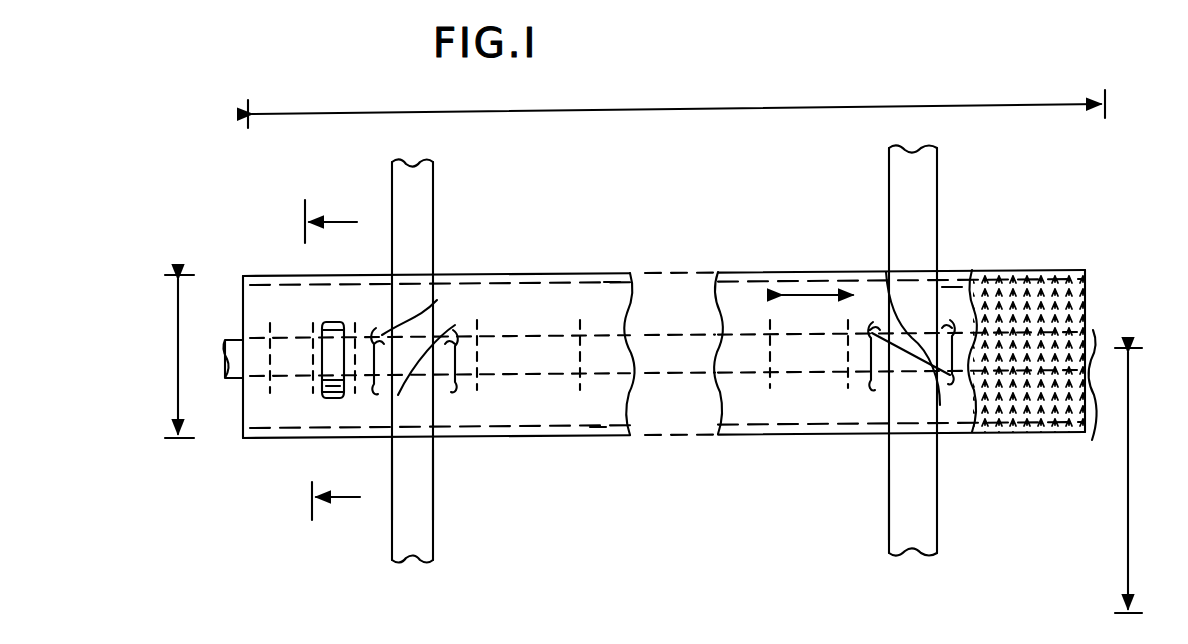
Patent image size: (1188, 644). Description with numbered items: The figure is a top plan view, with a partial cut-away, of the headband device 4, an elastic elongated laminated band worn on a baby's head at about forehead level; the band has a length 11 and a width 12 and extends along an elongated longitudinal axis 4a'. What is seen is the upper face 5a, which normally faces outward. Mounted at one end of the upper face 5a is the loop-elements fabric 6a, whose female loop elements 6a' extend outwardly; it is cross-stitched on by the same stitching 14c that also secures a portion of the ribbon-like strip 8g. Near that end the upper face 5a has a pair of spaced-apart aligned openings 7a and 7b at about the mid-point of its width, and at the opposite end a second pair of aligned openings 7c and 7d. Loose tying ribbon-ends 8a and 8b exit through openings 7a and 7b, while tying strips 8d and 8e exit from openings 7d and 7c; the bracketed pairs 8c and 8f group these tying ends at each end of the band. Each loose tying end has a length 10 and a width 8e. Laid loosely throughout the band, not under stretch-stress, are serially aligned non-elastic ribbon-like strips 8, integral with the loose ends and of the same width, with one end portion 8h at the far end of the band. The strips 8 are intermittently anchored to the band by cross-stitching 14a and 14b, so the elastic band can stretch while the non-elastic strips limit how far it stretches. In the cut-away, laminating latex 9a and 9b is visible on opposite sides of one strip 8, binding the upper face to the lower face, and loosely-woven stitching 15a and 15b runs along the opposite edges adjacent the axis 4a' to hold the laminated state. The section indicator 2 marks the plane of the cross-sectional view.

The section line 2- 2 is at (332, 358).
The device 4 is at (792, 176).
The elongated longitudinal axis 4a' is at (797, 363).
The upper face 5a is at (952, 285).
The woven covering 6a is at (1029, 324).
The female loop elements 6a' is at (1119, 315).
The opening 7a is at (952, 440).
The opening 7b is at (886, 272).
The opening 7c is at (457, 328).
The opening 7d is at (380, 335).
The non-elastic ribbon-like strips 8 is at (337, 358).
The tying strip ribbon-end 8a is at (897, 503).
The tying strip ribbon-end 8b is at (937, 208).
The strap segments 8c is at (802, 504).
The tying strip 8d is at (433, 200).
The tying strip 8e is at (442, 512).
The strap segment 8f is at (503, 455).
The ribbon-like strip 8g is at (1098, 425).
The strap end stub 8h is at (228, 368).
The laminating latex 9a is at (331, 320).
The laminating latex 9b is at (322, 392).
The length 10 is at (1126, 520).
The length 11 is at (567, 107).
The width 12 is at (179, 360).
The cross-stitching 14a is at (285, 325).
The cross-stitching 14b is at (607, 347).
The band 14c is at (1035, 434).
The stitching 15a is at (597, 426).
The stitching 15b is at (612, 285).